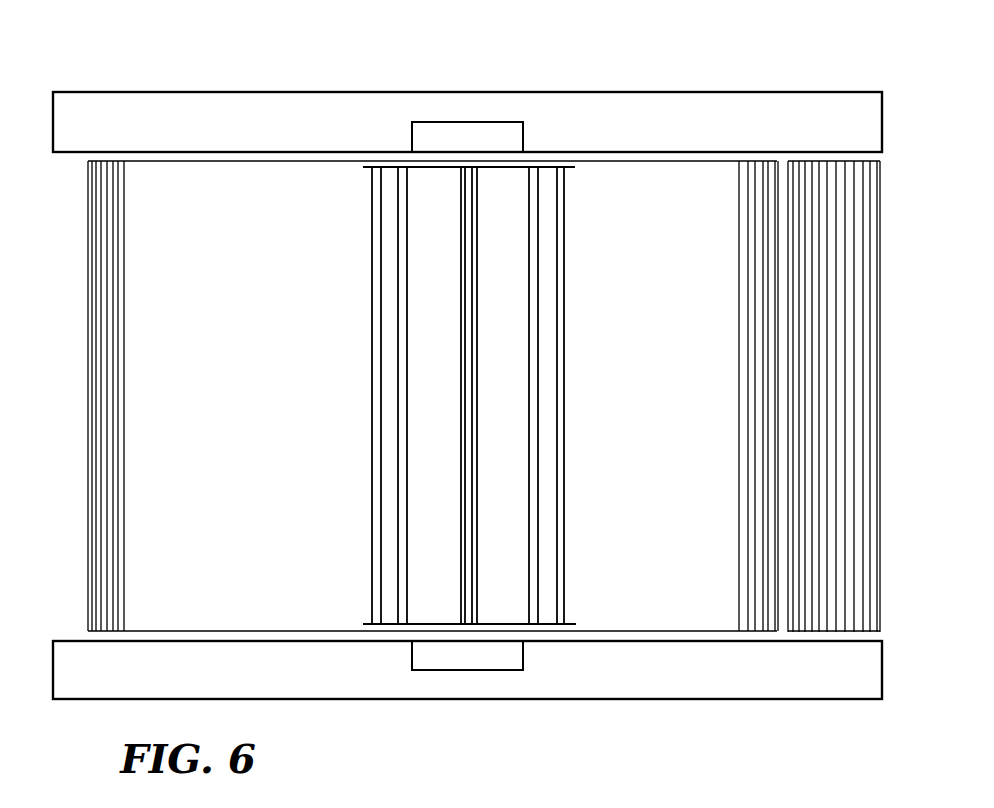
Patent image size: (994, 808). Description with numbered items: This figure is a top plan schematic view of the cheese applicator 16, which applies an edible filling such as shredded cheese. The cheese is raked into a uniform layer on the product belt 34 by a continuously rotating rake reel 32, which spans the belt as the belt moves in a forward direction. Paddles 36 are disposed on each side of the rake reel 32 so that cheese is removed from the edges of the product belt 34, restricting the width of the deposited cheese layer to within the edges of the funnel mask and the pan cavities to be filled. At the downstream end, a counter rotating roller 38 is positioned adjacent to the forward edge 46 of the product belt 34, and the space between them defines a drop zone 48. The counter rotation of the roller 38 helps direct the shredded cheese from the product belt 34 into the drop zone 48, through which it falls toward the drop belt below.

The applicator 16 is at (98, 81).
The rake reel 32 is at (565, 205).
The product belt 34 is at (687, 187).
The paddles 36 is at (550, 165).
The counter rotating roller 38 is at (852, 623).
The forward edge 46 is at (777, 632).
The drop zone 48 is at (784, 432).